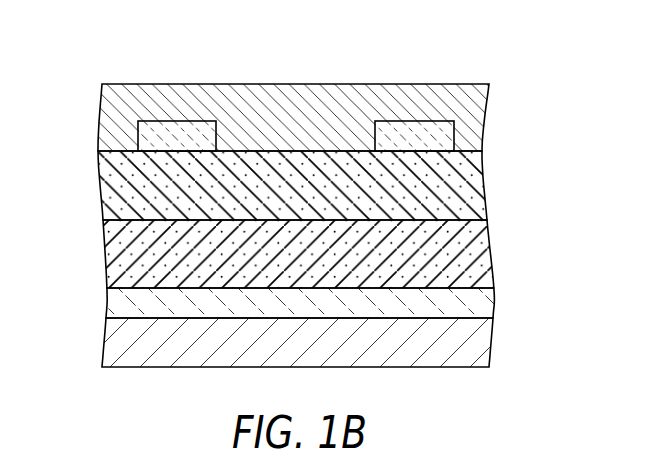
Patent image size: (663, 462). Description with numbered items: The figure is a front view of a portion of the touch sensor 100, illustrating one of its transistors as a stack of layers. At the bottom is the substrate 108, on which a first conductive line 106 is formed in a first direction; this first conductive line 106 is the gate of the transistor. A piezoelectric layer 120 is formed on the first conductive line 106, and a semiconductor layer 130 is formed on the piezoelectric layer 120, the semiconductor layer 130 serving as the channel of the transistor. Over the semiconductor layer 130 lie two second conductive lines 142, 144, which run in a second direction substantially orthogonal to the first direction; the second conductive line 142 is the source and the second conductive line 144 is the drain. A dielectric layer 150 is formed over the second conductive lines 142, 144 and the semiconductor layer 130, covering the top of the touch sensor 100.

The touch sensor 100 is at (296, 191).
The dielectric layer 150 is at (428, 92).
The second conductive line 142 is at (150, 138).
The second conductive line 144 is at (438, 138).
The semiconductor layer 130 is at (470, 187).
The piezoelectric layer 120 is at (480, 255).
The first conductive line 106 is at (122, 305).
The substrate 108 is at (478, 342).